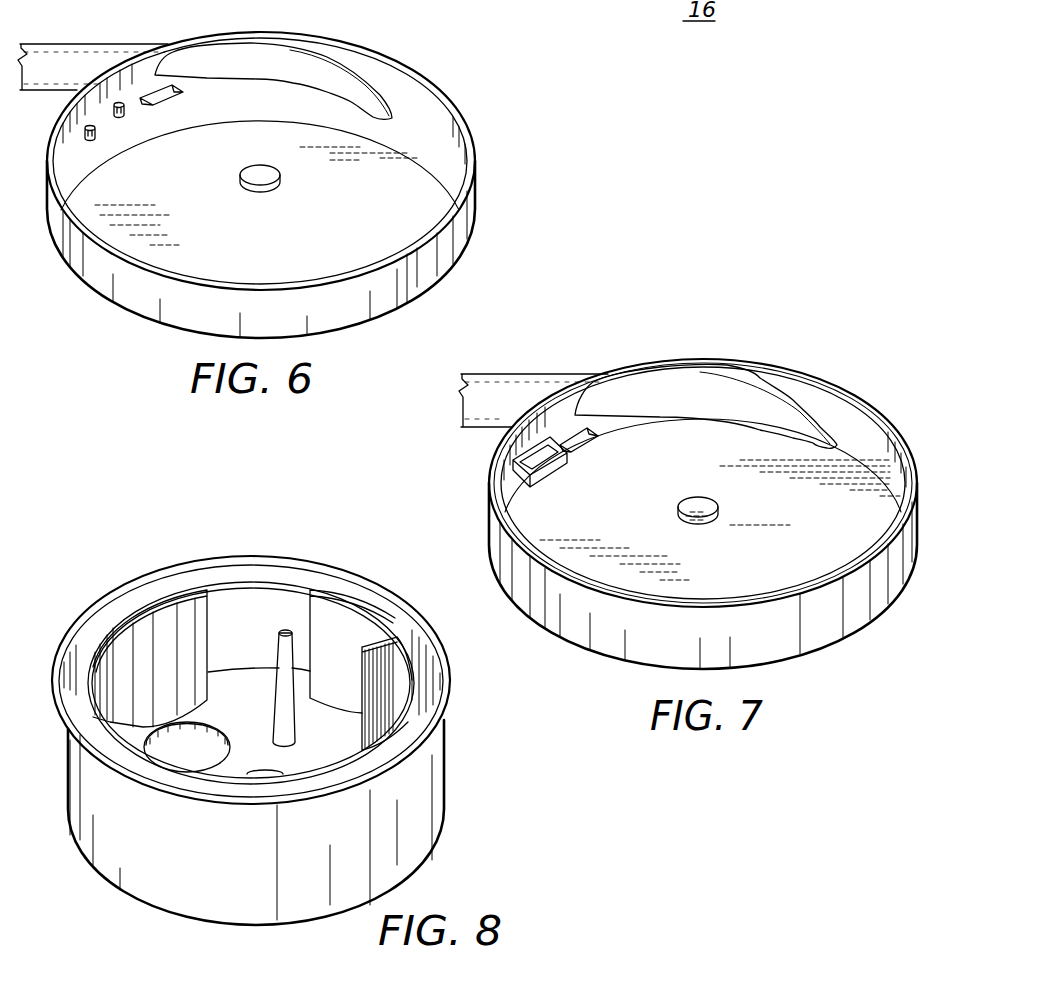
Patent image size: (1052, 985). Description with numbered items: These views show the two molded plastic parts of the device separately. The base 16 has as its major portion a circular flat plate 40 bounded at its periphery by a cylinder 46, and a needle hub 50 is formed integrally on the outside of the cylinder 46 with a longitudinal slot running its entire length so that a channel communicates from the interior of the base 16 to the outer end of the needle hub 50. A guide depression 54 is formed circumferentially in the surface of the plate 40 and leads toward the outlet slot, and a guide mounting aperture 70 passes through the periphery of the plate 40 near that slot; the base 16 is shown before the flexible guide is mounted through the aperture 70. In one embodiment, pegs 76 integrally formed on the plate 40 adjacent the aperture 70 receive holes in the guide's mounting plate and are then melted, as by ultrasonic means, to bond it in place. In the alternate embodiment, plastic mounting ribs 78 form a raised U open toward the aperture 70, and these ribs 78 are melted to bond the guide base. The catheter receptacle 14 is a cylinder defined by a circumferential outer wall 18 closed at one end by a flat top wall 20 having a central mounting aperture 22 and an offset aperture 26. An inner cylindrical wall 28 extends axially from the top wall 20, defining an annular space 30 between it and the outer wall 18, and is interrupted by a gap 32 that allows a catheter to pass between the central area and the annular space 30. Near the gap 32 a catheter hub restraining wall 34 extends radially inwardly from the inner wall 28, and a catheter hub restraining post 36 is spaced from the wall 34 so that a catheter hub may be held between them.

In FIG. 8, the catheter receptacle 14 is at (455, 889).
In FIG. 6, the base 16 is at (513, 184).
In FIG. 7, the base 16 is at (910, 631).
In FIG. 8, the circumferential outer wall 18 is at (134, 583).
In FIG. 8, the top wall 20 is at (233, 682).
In FIG. 8, the central mounting aperture 22 is at (263, 770).
In FIG. 8, the offset aperture 26 is at (206, 730).
In FIG. 8, the inner cylindrical wall 28 is at (184, 586).
In FIG. 8, the annular space 30 is at (81, 652).
In FIG. 8, the gap 32 is at (210, 610).
In FIG. 8, the catheter hub restraining wall 34 is at (372, 674).
In FIG. 8, the catheter hub restraining post 36 is at (281, 621).
In FIG. 6, the flat plate 40 is at (345, 243).
In FIG. 7, the flat plate 40 is at (660, 582).
In FIG. 6, the cylinder 46 is at (408, 283).
In FIG. 7, the cylinder 46 is at (817, 620).
In FIG. 6, the needle hub 50 is at (85, 58).
In FIG. 7, the needle hub 50 is at (533, 400).
In FIG. 6, the guide depression 54 is at (317, 70).
In FIG. 7, the guide depression 54 is at (690, 398).
In FIG. 6, the guide mounting aperture 70 is at (163, 100).
In FIG. 7, the guide mounting aperture 70 is at (578, 443).
In FIG. 6, the pegs 76 is at (118, 118).
In FIG. 7, the mounting ribs 78 is at (532, 480).